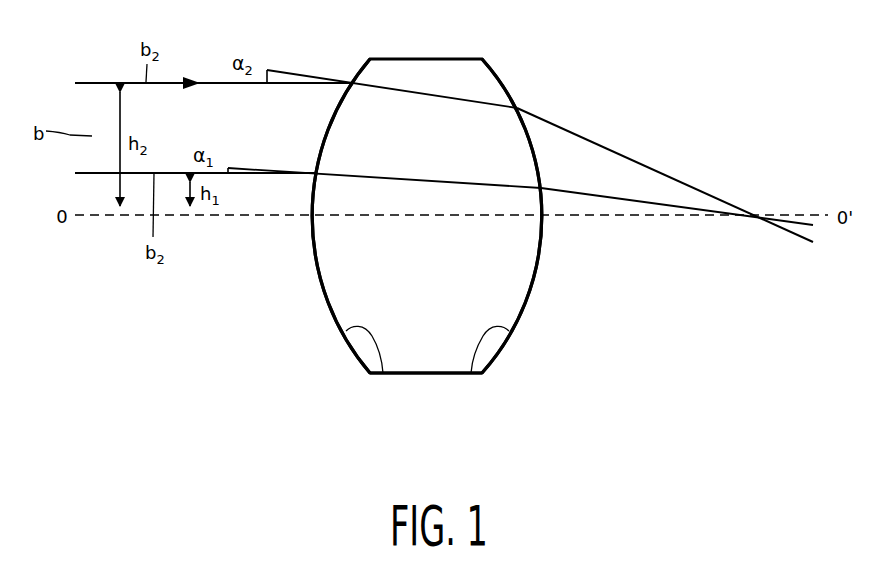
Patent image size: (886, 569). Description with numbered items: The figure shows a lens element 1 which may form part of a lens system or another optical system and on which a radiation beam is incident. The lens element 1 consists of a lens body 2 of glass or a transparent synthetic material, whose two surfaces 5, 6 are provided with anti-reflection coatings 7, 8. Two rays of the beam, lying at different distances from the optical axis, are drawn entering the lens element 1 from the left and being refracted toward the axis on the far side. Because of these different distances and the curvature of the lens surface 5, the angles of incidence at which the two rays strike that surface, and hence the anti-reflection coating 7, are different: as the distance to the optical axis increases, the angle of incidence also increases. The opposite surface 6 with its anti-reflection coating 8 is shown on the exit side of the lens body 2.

The lens element 1 is at (413, 29).
The lens body 2 is at (438, 345).
The lens surface 5 is at (383, 373).
The lens surface 6 is at (471, 373).
The anti-reflection coating 7 is at (320, 282).
The anti-reflection coating 8 is at (537, 282).